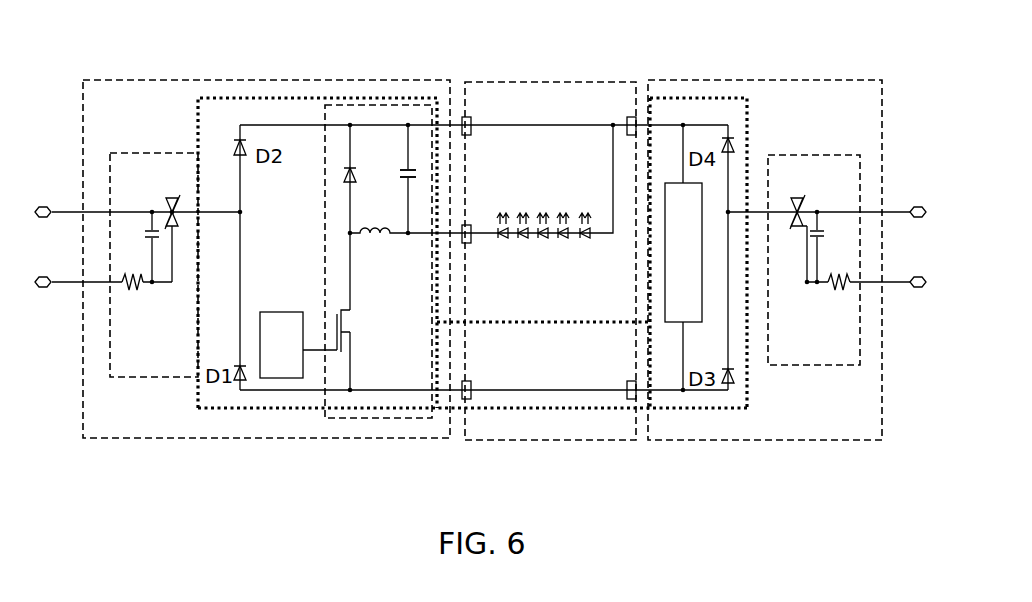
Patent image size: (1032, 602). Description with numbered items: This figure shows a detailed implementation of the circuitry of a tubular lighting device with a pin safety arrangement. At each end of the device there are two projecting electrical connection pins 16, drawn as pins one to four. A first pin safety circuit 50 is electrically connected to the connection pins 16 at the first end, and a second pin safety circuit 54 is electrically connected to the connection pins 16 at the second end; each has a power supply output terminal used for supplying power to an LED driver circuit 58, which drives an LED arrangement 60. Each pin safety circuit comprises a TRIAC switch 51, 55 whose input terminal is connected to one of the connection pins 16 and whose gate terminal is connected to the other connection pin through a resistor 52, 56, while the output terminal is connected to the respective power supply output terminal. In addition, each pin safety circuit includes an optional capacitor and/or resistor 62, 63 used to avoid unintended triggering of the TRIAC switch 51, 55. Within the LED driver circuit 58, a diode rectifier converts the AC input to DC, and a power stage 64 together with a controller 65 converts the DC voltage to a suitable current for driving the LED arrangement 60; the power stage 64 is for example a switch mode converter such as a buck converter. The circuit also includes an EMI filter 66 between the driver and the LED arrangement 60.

The electrical connection pins 16 is at (50, 192).
The first pin safety circuit 50 is at (111, 152).
The TRIAC switch 51 is at (181, 198).
The resistor 52 is at (114, 282).
The second pin safety circuit 54 is at (773, 157).
The TRIAC switch 55 is at (797, 195).
The resistor 56 is at (847, 280).
The LED driver circuit 58 is at (250, 408).
The LED arrangement 60 is at (520, 80).
The capacitor and/or resistor 62 is at (146, 240).
The capacitor and/or resistor 63 is at (813, 237).
The power stage 64 is at (400, 145).
The controller 65 is at (288, 315).
The EMI filter 66 is at (670, 262).